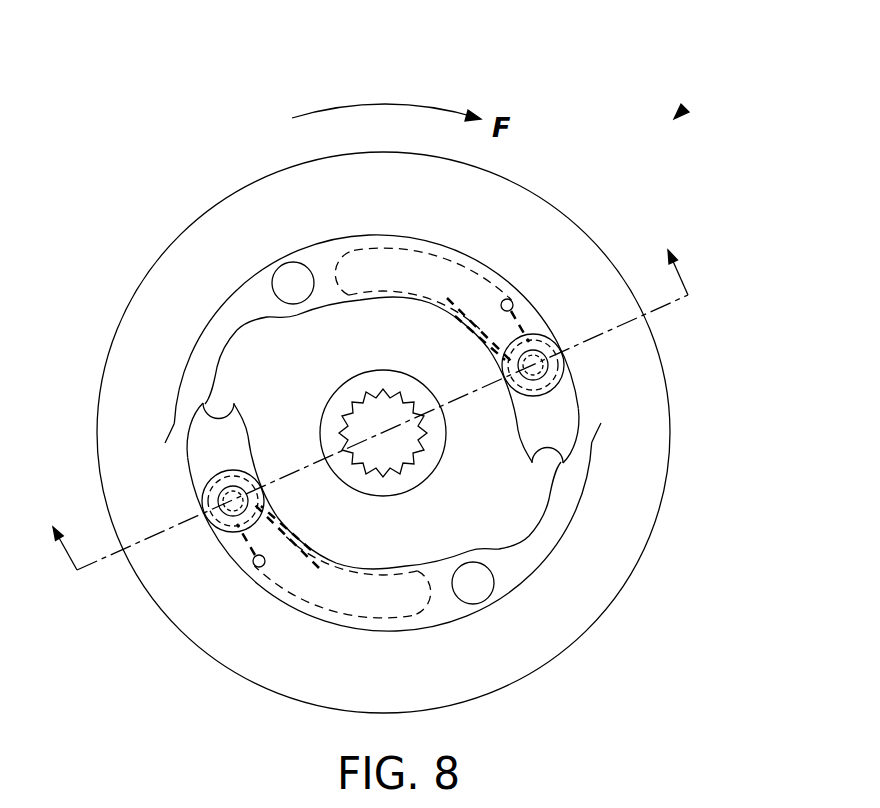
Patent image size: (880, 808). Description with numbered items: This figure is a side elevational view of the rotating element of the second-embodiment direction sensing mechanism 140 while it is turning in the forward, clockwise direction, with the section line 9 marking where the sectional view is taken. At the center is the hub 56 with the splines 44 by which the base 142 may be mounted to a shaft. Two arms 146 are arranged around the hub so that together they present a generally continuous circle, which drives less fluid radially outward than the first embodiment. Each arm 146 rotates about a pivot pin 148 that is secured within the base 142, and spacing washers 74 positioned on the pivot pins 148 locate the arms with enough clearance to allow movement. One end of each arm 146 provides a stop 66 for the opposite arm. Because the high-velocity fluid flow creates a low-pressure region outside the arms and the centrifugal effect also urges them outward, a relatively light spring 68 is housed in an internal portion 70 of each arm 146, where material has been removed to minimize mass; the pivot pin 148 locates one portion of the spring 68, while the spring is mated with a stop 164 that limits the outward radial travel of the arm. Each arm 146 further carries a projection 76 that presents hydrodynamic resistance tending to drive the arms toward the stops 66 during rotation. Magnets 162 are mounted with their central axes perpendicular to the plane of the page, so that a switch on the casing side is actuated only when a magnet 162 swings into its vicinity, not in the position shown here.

The direction sensing mechanism 140 is at (732, 63).
The base 142 is at (243, 183).
The arm 146 is at (205, 323).
The magnet 162 is at (295, 283).
The internal portion 70 is at (417, 246).
The spring 68 is at (467, 310).
The stop 164 is at (550, 282).
The pivot pin 148 is at (552, 397).
The spacing washer 74 is at (580, 409).
The projection 76 is at (163, 443).
The stop 66 is at (238, 410).
The splines 44 is at (360, 398).
The hub 56 is at (368, 493).
The section line 9- 9 is at (361, 393).